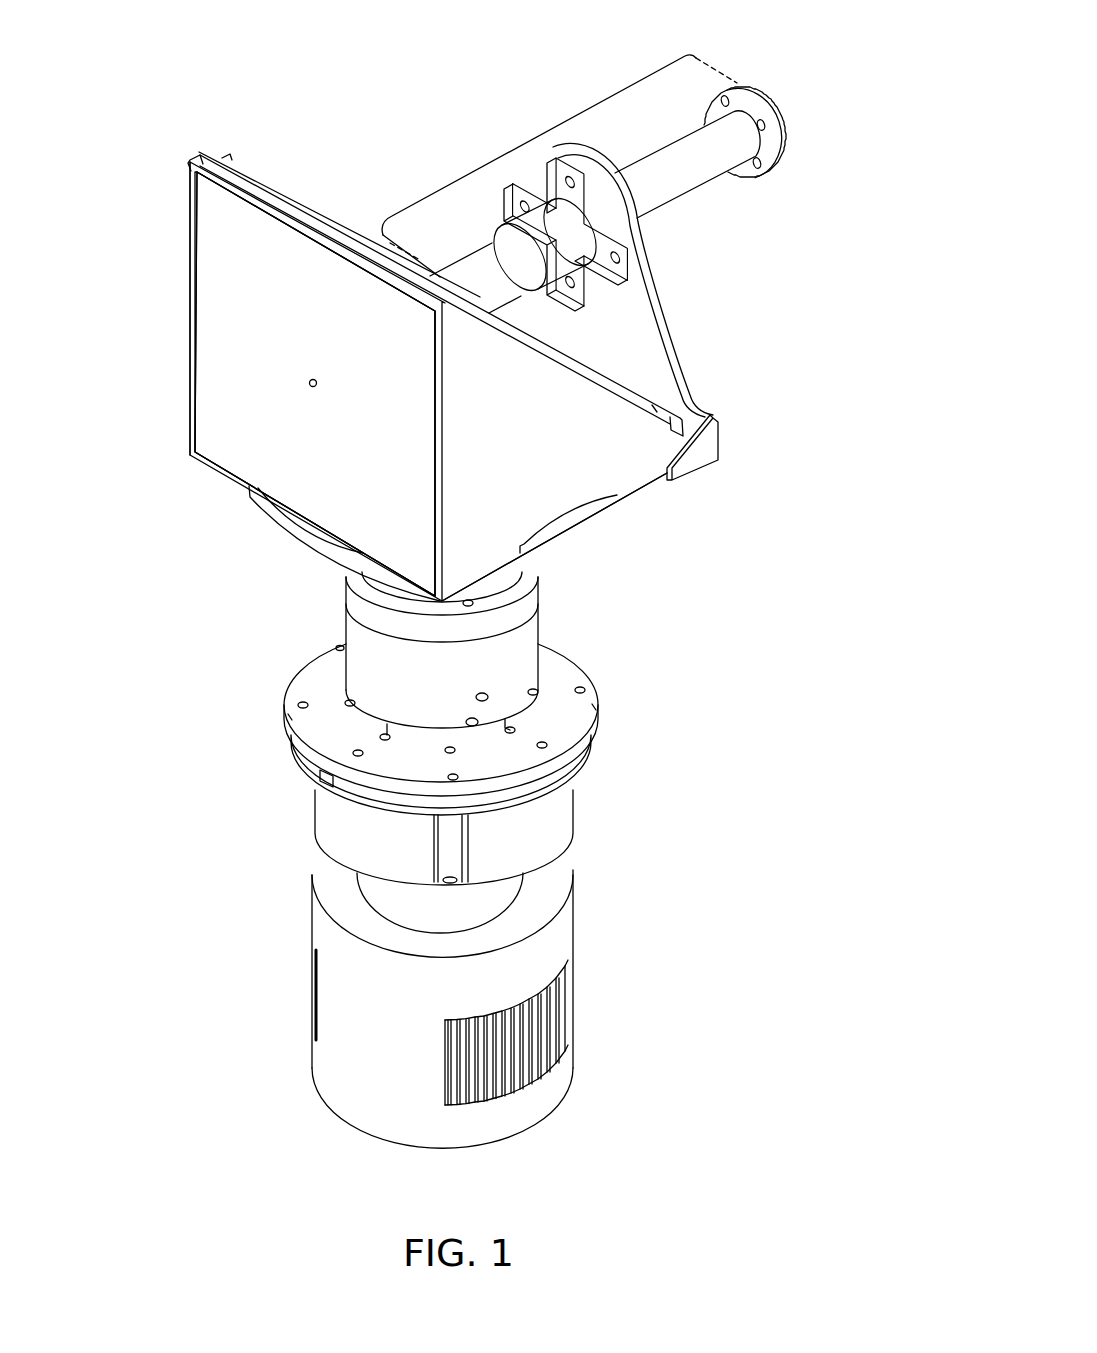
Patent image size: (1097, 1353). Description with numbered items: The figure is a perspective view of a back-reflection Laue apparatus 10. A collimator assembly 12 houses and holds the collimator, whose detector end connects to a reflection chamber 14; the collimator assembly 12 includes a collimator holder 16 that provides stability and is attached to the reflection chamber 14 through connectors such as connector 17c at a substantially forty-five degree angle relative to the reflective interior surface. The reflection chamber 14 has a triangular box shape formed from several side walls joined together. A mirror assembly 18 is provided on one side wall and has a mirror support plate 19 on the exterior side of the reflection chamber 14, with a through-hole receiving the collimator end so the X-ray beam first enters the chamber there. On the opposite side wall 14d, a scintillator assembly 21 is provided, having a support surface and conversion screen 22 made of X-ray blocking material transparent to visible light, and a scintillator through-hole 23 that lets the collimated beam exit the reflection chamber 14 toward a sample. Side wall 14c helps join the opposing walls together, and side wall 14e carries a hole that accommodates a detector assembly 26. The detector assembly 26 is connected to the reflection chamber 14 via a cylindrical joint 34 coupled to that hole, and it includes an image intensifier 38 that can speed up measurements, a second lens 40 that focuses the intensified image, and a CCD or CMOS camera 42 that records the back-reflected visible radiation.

The back-reflection Laue apparatus 10 is at (197, 72).
The collimator assembly 12 is at (527, 143).
The reflection chamber 14 is at (371, 121).
The side wall 14c is at (563, 477).
The side wall 14d is at (190, 203).
The side wall 14e is at (645, 489).
The collimator holder 16 is at (676, 323).
The connector 17c is at (720, 460).
The mirror assembly 18 is at (283, 178).
The mirror support plate 19 is at (656, 398).
The scintillator assembly 21 is at (214, 372).
The scintillator support surface and conversion screen 22 is at (215, 298).
The scintillator through-hole 23 is at (309, 388).
The detector assembly 26 is at (258, 578).
The cylindrical joint 34 is at (282, 533).
The image intensifier 38 is at (527, 652).
The second lens 40 is at (555, 803).
The CCD or CMOS camera 42 is at (557, 940).